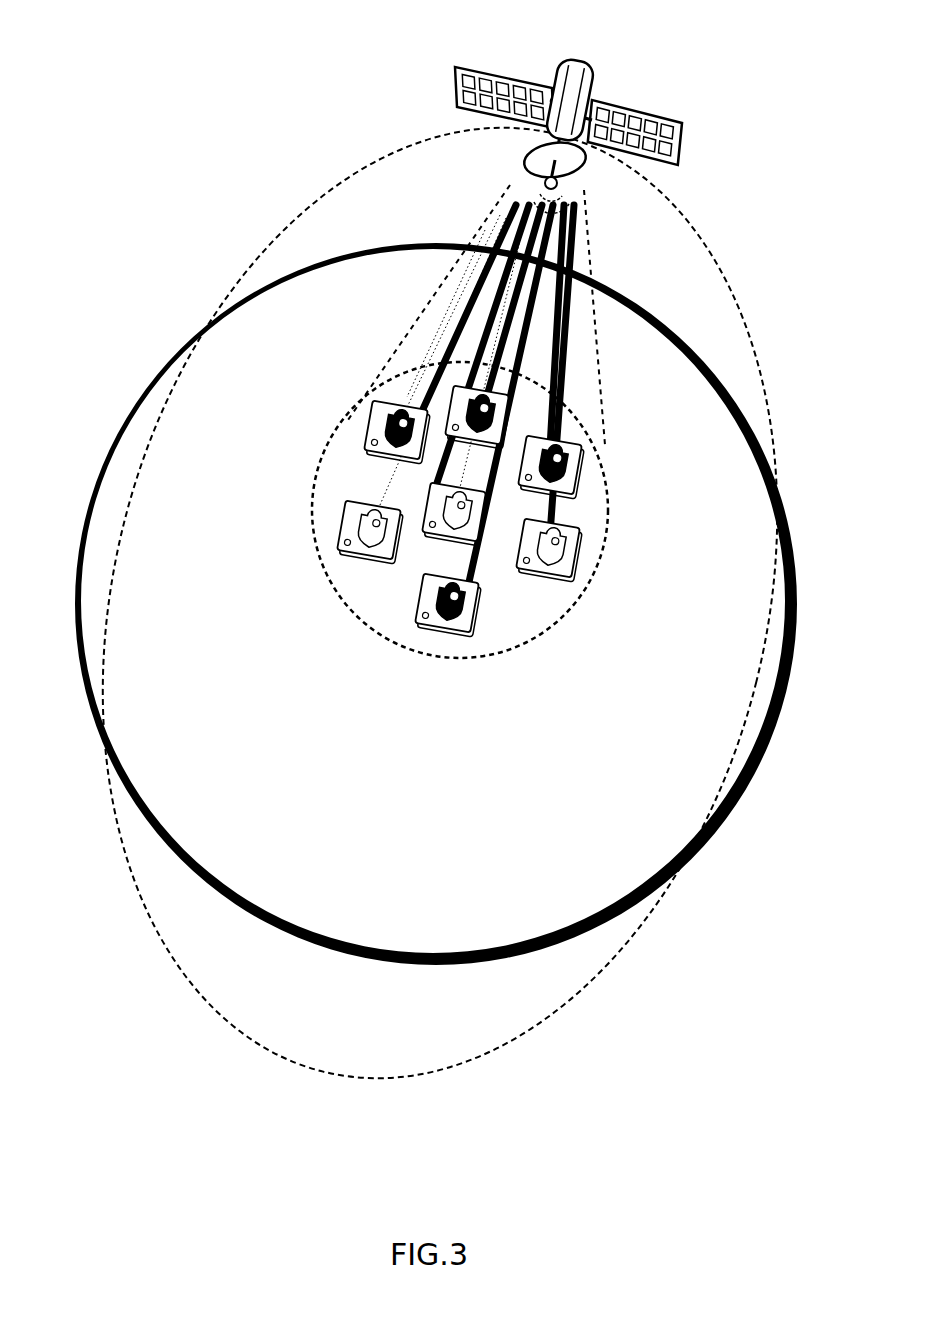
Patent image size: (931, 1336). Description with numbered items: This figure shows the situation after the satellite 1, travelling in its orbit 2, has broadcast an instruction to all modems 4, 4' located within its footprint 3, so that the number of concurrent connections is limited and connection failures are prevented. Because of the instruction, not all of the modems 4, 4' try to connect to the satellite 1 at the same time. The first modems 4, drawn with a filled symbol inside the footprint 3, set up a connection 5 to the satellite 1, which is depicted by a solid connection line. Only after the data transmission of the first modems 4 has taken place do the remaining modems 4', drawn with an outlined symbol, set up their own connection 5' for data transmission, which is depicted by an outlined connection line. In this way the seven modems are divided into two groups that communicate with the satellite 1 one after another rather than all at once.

The satellite 1 is at (586, 62).
The orbit 2 is at (567, 1000).
The footprint 3 is at (330, 586).
The modems 4 is at (473, 550).
The modems 4' is at (459, 598).
The connection 5 is at (394, 371).
The connection 5' is at (545, 402).